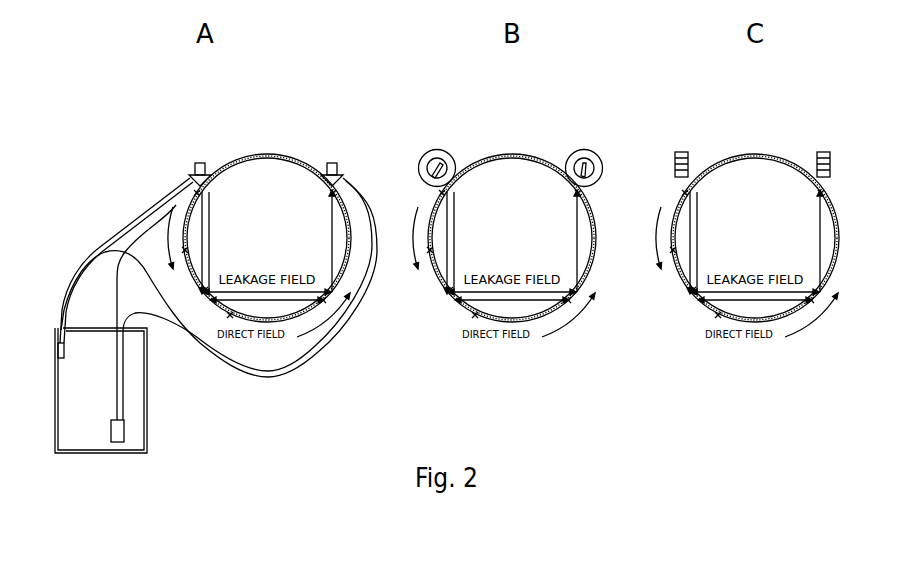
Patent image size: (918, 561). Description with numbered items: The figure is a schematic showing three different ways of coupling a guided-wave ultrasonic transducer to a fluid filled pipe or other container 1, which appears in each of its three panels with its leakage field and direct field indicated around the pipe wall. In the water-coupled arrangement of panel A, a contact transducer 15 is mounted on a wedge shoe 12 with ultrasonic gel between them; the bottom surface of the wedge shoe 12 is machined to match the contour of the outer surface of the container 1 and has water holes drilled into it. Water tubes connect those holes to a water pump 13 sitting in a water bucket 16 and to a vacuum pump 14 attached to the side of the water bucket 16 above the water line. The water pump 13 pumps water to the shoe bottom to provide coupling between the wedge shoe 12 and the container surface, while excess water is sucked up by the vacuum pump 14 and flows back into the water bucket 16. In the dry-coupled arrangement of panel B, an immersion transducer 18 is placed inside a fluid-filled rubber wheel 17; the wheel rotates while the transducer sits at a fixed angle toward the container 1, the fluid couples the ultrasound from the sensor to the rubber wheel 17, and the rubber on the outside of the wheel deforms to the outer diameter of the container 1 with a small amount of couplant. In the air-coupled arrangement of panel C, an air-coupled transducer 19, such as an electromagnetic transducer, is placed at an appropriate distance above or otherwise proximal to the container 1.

In FIG. 2A, the fluid filled pipe 1 is at (246, 178).
In FIG. 2B, the fluid filled pipe 1 is at (527, 177).
In FIG. 2C, the fluid filled pipe 1 is at (750, 175).
In FIG. 2A, the wedge shoe 12 is at (343, 177).
In FIG. 2A, the water pump 13 is at (121, 438).
In FIG. 2A, the vacuum pump 14 is at (59, 344).
In FIG. 2A, the contact transducer 15 is at (197, 161).
In FIG. 2A, the water bucket 16 is at (147, 393).
In FIG. 2B, the rubber wheel 17 is at (434, 151).
In FIG. 2B, the immersion transducer 18 is at (441, 166).
In FIG. 2C, the air-coupled transducer 19 is at (680, 151).